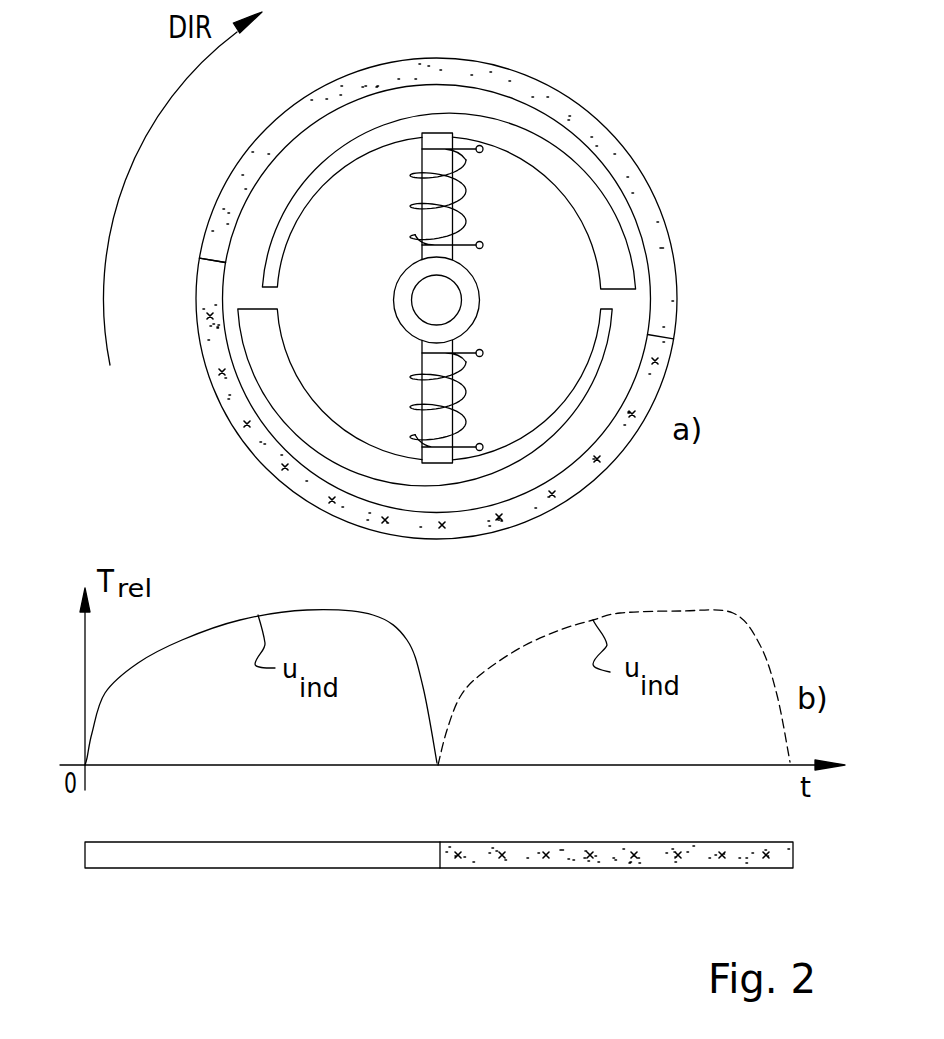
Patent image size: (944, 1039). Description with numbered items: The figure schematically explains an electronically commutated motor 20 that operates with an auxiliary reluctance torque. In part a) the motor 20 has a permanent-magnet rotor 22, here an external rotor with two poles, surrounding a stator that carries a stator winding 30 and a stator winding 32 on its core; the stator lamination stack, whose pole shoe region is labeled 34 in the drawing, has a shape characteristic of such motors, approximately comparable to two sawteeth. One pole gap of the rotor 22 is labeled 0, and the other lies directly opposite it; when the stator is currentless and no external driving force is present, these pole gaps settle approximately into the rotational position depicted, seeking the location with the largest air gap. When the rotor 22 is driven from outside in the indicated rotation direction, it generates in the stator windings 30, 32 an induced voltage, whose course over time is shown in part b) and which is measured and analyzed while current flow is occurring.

The motor 20 is at (541, 33).
The permanent-magnet rotor 22 is at (589, 125).
The pole gap 0 is at (199, 258).
The stator winding 30 is at (412, 163).
The stator winding 32 is at (412, 363).
The pole shoe of stator 34 is at (268, 362).